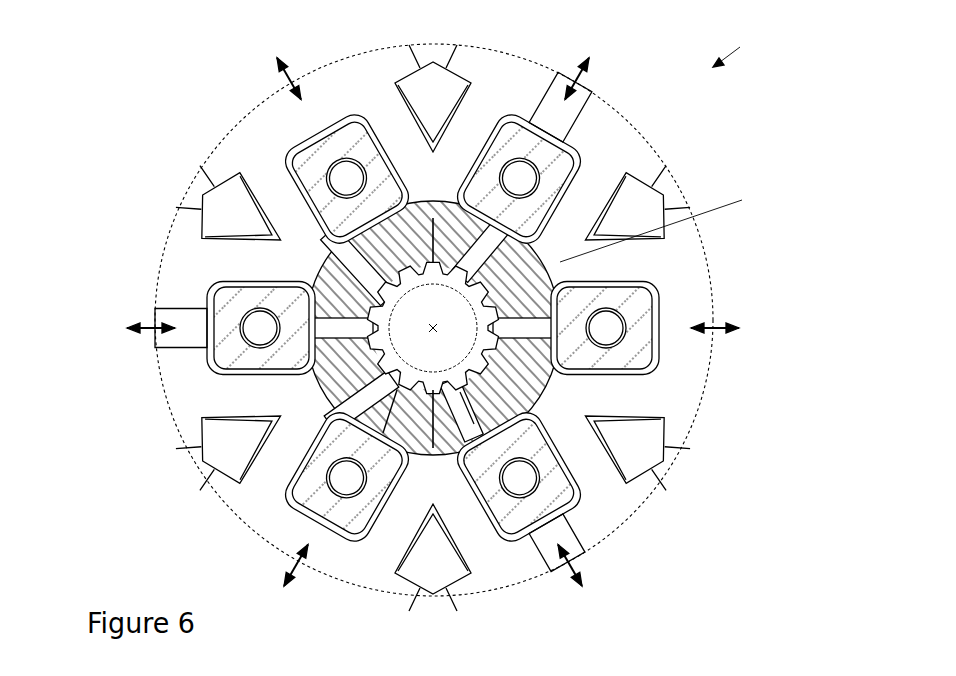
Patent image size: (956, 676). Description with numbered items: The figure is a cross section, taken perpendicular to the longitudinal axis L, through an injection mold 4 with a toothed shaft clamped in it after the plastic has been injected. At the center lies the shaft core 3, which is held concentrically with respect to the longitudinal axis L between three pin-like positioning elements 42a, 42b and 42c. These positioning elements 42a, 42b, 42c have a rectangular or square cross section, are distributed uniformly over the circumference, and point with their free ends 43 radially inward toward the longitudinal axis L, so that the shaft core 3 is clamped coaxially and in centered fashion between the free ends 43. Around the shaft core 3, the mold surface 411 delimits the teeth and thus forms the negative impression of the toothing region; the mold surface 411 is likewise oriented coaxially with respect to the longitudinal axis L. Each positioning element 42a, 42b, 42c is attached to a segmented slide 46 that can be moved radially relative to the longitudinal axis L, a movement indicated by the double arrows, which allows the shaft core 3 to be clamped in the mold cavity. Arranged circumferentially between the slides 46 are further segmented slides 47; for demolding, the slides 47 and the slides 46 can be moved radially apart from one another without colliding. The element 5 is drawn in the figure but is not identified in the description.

The shaft core 3 is at (505, 315).
The injection mold 4 is at (733, 49).
The sliding block 5 is at (262, 225).
The positioning element 42a is at (330, 385).
The positioning element 42b is at (437, 197).
The positioning element 42c is at (577, 397).
The free end 43 is at (545, 250).
The slide 46 is at (519, 90).
The slide 47 is at (262, 123).
The mold surface 411 is at (268, 253).
The longitudinal axis L is at (658, 228).